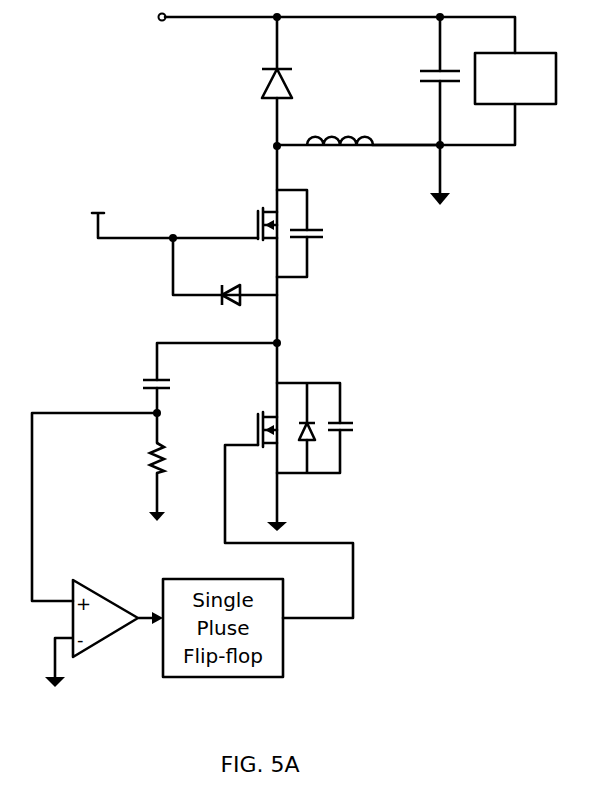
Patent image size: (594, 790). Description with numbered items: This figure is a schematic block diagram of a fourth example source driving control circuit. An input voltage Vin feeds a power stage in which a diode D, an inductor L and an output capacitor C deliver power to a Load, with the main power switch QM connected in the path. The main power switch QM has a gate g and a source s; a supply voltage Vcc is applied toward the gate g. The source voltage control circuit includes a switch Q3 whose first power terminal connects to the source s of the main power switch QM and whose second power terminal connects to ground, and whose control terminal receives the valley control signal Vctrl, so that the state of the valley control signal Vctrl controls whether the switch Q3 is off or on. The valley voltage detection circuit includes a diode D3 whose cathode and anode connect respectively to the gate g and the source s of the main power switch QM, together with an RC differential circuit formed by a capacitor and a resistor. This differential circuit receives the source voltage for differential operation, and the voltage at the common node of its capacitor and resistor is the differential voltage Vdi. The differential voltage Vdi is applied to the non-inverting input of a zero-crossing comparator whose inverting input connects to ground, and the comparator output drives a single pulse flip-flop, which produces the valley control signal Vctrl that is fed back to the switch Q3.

The input voltage terminal Vin is at (146, 22).
The diode D is at (268, 105).
The output capacitor C is at (428, 85).
The load Load is at (515, 81).
The inductor L is at (345, 148).
The main power switch QM is at (264, 205).
The supply voltage Vcc is at (84, 197).
The gate g is at (193, 224).
The diode D3 is at (224, 283).
The source s is at (287, 306).
The switch Q3 is at (260, 411).
The differential voltage Vdi is at (151, 418).
The valley control signal Vctrl is at (312, 620).